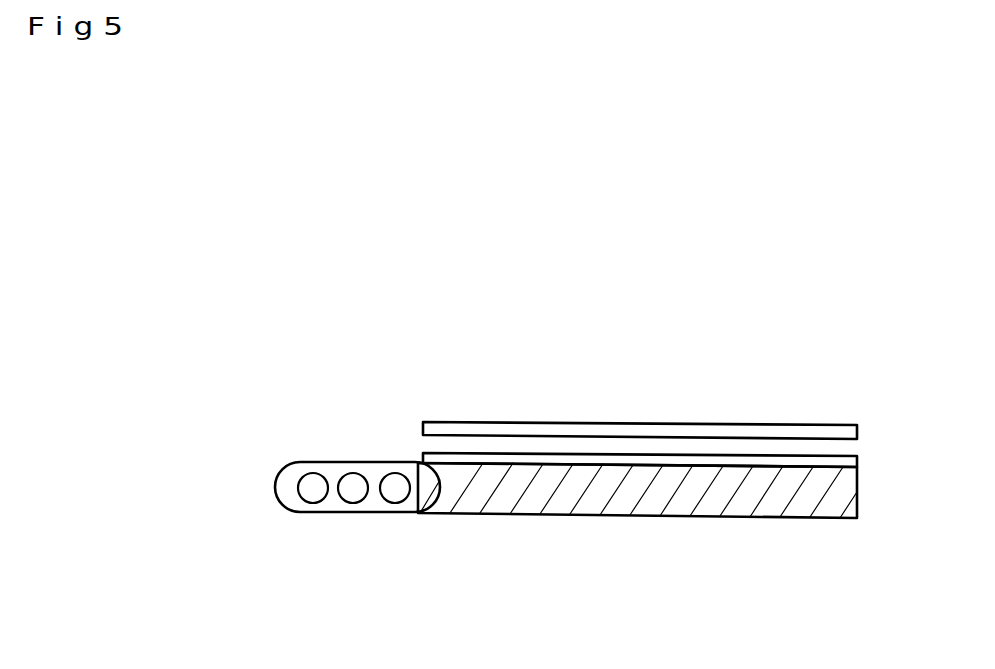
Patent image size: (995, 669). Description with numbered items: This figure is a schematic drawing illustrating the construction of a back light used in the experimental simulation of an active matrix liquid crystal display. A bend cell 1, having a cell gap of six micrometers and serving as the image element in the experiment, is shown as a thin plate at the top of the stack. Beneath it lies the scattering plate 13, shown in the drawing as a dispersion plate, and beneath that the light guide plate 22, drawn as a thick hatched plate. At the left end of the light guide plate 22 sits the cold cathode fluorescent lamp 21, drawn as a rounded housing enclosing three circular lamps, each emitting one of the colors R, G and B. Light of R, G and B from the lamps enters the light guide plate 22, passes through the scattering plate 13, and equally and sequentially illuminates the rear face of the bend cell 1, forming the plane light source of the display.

The bend cell 1 is at (722, 428).
The scattering plate 13 is at (445, 458).
The cold cathode fluorescent lamp 21 is at (490, 560).
The light guide plate 22 is at (623, 500).
The red light R is at (313, 500).
The green light G is at (353, 500).
The blue light B is at (396, 538).